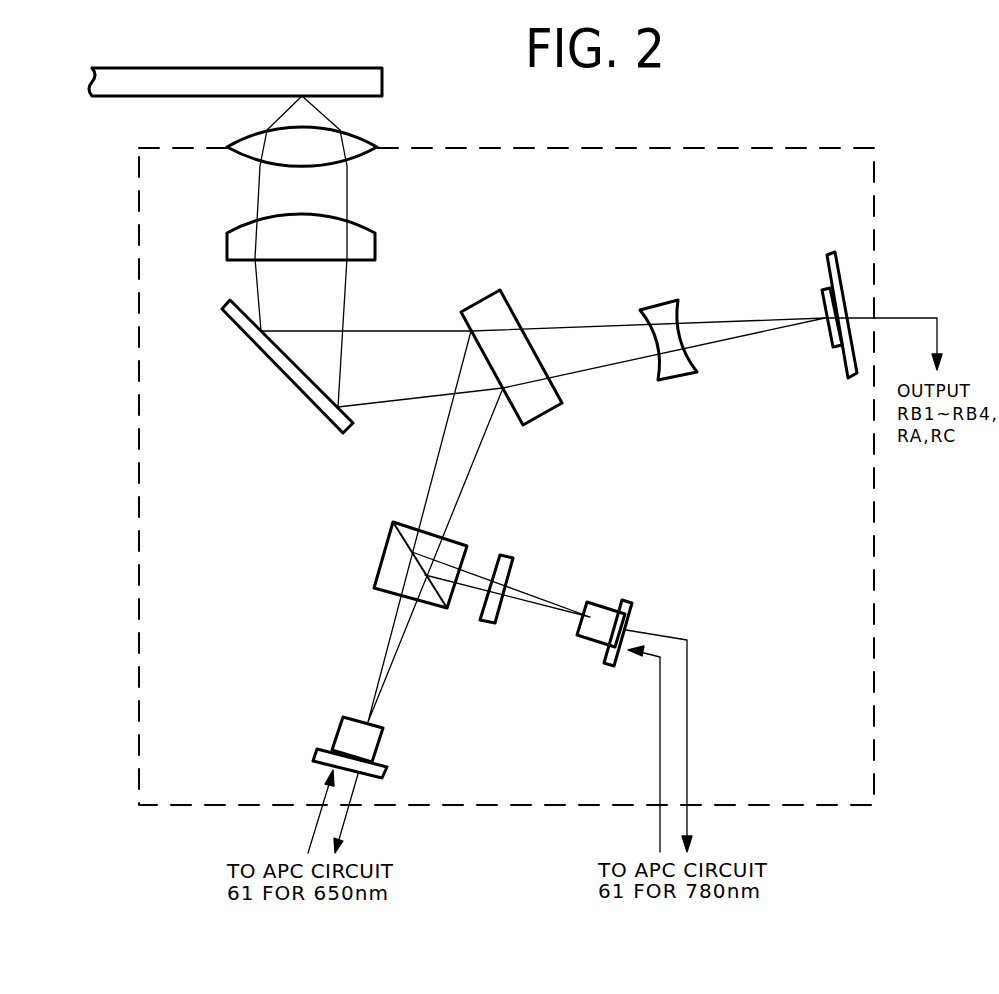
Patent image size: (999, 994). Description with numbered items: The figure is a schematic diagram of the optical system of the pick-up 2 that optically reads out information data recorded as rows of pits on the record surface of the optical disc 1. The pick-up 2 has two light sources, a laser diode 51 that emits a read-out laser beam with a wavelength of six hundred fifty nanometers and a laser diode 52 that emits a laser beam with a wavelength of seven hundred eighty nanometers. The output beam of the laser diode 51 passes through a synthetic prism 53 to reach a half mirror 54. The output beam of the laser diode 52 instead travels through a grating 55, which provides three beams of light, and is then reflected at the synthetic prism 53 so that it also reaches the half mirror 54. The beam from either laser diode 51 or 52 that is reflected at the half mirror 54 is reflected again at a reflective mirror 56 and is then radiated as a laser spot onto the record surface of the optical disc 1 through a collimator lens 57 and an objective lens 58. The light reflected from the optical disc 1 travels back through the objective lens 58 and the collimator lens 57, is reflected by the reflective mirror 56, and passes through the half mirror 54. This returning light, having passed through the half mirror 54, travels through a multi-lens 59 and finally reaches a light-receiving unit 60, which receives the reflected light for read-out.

The optical disc 1 is at (157, 67).
The pick-up 2 is at (138, 232).
The laser diode 51 is at (338, 732).
The laser diode 52 is at (604, 606).
The synthetic prism 53 is at (382, 560).
The half mirror 54 is at (509, 303).
The grating 55 is at (510, 553).
The reflective mirror 56 is at (283, 372).
The collimator lens 57 is at (377, 249).
The objective lens 58 is at (362, 153).
The multi-lens 59 is at (667, 302).
The light-receiving unit 60 is at (829, 265).